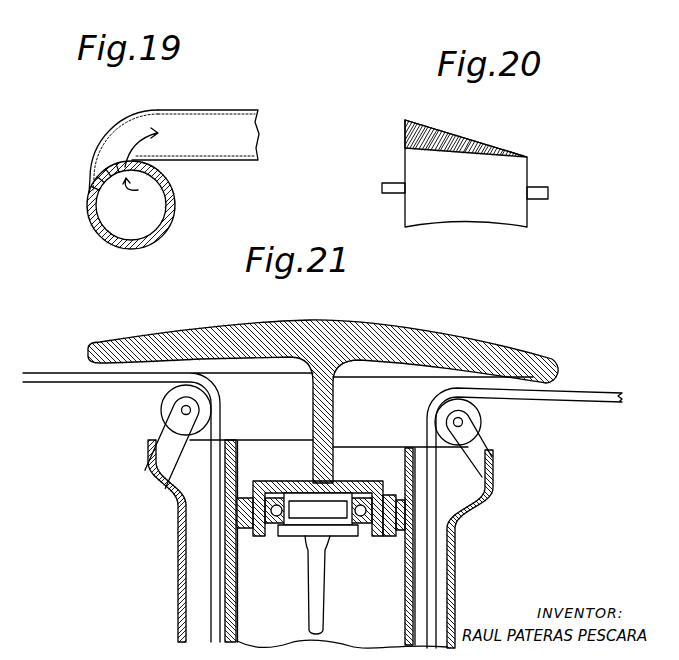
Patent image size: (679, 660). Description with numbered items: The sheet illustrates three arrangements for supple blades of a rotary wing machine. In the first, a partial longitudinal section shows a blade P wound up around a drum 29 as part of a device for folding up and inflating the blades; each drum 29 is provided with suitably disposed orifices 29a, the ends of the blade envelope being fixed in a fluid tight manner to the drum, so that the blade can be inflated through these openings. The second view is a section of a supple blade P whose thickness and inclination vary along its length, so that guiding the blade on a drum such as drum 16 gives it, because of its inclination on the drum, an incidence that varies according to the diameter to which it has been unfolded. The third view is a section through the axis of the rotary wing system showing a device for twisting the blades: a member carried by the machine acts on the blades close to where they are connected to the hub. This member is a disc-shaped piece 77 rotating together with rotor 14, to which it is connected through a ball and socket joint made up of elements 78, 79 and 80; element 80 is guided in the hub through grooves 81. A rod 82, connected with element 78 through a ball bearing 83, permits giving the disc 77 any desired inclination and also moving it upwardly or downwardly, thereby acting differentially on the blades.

In FIG. 19, the blade P is at (227, 110).
In FIG. 20, the blade P is at (487, 140).
In FIG. 19, the drum 29 is at (170, 192).
In FIG. 19, the orifices 29a is at (110, 180).
In FIG. 20, the drum 16 is at (483, 203).
In FIG. 21, the disc-shaped piece 77 is at (179, 337).
In FIG. 21, the ball bearing 83 is at (364, 487).
In FIG. 21, the ball and socket joint element 78 is at (383, 497).
In FIG. 21, the ball and socket joint element 79 is at (392, 513).
In FIG. 21, the ball and socket joint element 80 is at (400, 540).
In FIG. 21, the grooves 81 is at (226, 593).
In FIG. 21, the rotor 14 is at (226, 567).
In FIG. 21, the rod 82 is at (315, 592).